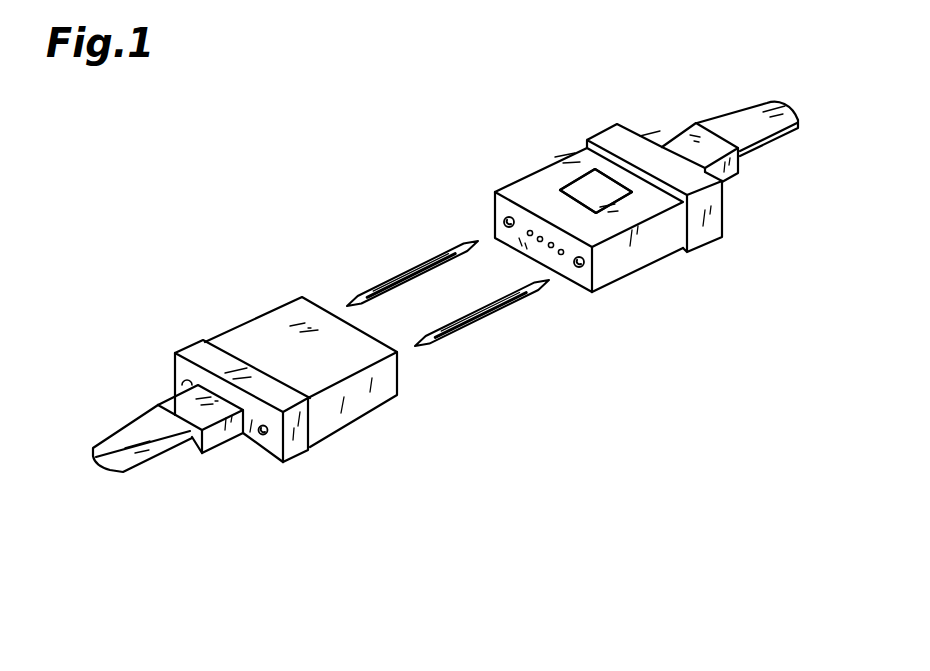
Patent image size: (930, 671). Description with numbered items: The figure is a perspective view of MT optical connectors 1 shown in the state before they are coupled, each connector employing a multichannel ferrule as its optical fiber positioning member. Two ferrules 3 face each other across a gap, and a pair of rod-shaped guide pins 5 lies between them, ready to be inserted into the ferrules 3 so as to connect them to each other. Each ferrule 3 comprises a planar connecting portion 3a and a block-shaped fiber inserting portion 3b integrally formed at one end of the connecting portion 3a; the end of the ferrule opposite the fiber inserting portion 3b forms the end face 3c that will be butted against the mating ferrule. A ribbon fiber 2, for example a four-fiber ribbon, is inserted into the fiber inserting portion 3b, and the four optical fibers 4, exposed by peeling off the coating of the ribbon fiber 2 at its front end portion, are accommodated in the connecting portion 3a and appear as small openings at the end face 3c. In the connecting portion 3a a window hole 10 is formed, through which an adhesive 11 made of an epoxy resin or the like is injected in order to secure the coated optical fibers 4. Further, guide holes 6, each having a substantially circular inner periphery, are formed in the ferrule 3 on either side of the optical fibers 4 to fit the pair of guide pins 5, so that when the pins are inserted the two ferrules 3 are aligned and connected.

The MT optical connector 1 is at (880, 322).
The ribbon fiber 2 is at (157, 444).
The ferrule 3 is at (376, 422).
The connecting portion 3a is at (647, 252).
The fiber inserting portion 3b is at (707, 230).
The end face 3c is at (580, 288).
The optical fibers 4 is at (561, 256).
The guide pins 5 is at (474, 310).
The guide holes 6 is at (578, 257).
The window hole 10 is at (598, 172).
The adhesive 11 is at (608, 192).